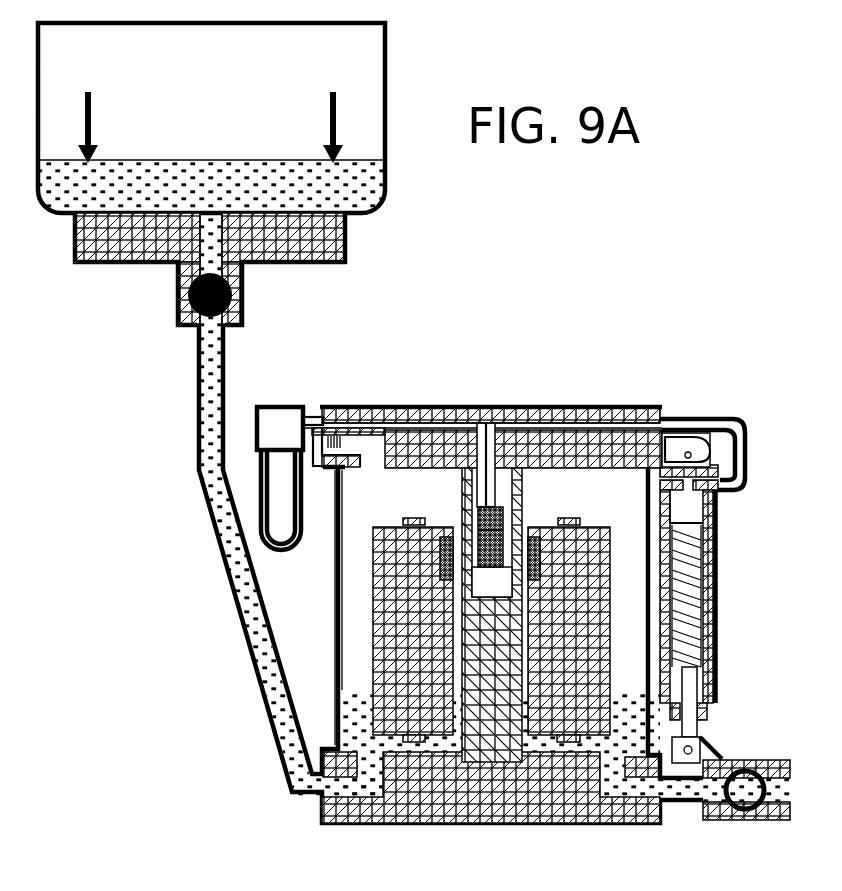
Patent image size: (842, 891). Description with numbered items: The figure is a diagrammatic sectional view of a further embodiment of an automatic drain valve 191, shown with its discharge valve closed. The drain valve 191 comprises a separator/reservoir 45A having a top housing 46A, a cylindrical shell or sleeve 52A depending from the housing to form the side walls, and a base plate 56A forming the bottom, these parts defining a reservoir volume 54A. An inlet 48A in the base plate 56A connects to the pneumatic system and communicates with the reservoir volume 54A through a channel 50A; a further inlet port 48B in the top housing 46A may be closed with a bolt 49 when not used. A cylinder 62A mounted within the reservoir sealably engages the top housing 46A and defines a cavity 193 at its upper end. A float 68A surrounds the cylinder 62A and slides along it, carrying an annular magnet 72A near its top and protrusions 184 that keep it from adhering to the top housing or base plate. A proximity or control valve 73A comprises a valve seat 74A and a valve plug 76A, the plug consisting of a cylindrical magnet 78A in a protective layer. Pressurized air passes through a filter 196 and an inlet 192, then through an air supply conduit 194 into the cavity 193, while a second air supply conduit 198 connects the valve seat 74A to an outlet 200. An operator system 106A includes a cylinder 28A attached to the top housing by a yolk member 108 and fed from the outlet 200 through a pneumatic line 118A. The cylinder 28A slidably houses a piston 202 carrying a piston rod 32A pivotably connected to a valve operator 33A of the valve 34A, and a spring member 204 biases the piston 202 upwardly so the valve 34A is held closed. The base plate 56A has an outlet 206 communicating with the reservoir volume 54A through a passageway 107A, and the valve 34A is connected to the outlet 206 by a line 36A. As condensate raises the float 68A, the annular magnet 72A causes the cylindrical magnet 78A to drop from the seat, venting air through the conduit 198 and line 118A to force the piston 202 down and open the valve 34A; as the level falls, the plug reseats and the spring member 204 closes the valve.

The automatic drain valve 191 is at (464, 362).
The separator/reservoir 45A is at (351, 384).
The inlet 192 is at (320, 413).
The air supply conduit 194 is at (400, 420).
The top housing 46A is at (525, 407).
The second air supply conduit 198 is at (580, 407).
The outlet 200 is at (675, 410).
The yolk member 108 is at (690, 430).
The pneumatic line 118A is at (735, 418).
The filter 196 is at (266, 436).
The bolt 49 is at (305, 445).
The further inlet port 48B is at (313, 466).
The protrusions 184 is at (403, 520).
The valve seat 74A is at (478, 508).
The proximity or control valve 73A is at (478, 512).
The cavity 193 is at (505, 475).
The cylindrical magnet 78A is at (505, 530).
The reservoir volume 54A is at (350, 537).
The cylindrical shell or sleeve 52A is at (338, 602).
The annular magnet 72A is at (446, 560).
The valve plug 76A is at (470, 590).
The float 68A is at (402, 684).
The cylinder 62A is at (474, 667).
The base plate 56A is at (469, 804).
The inlet 48A is at (320, 803).
The channel 50A is at (357, 790).
The passageway 107A is at (602, 800).
The outlet 206 is at (665, 808).
The line 36A is at (693, 805).
The valve 34A is at (762, 762).
The valve operator 33A is at (710, 750).
The piston rod 32A is at (712, 688).
The spring member 204 is at (703, 628).
The cylinder 28A is at (717, 606).
The piston 202 is at (693, 522).
The operator system 106A is at (736, 580).